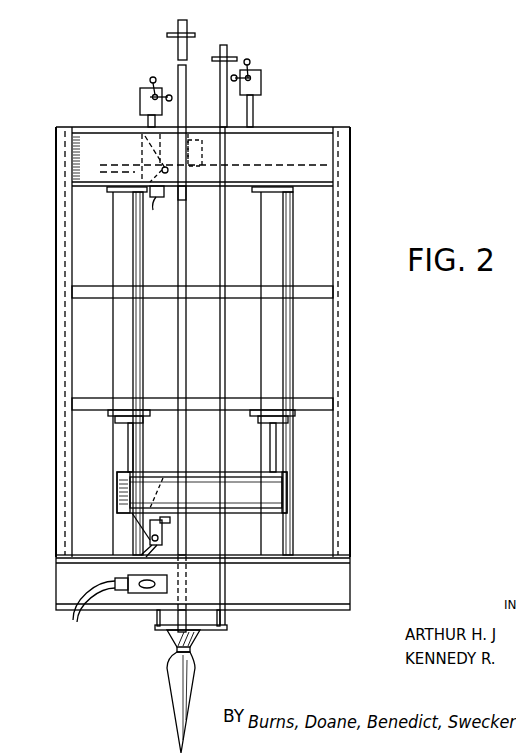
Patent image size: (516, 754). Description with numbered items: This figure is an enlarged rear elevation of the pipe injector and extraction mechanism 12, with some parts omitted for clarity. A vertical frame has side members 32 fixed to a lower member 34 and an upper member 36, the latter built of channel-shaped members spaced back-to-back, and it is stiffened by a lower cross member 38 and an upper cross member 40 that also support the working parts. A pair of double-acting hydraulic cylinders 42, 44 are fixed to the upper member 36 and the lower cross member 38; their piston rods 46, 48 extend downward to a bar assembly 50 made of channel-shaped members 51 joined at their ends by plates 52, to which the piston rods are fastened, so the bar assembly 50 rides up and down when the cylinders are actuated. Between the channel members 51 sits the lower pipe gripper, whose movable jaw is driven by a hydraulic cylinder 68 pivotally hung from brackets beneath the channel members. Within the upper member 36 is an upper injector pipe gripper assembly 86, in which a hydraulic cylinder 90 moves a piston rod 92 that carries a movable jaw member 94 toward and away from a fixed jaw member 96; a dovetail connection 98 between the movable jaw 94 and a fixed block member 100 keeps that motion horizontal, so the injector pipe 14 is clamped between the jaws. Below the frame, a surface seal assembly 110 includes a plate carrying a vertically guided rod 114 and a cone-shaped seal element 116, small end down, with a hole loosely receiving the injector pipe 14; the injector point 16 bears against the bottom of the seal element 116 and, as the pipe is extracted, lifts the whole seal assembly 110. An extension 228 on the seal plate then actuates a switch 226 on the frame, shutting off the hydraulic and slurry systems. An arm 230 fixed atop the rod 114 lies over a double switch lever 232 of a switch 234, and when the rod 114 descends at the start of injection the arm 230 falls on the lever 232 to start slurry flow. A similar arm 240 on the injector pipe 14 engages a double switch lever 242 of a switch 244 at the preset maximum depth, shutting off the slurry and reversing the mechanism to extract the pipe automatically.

The pipe injector and extraction mechanism 12 is at (362, 465).
The injector pipe 14 is at (177, 357).
The injector point 16 is at (170, 700).
The side members 32 is at (57, 378).
The lower member 34 is at (335, 597).
The upper member 36 is at (312, 140).
The lower cross member 38 is at (306, 407).
The upper cross member 40 is at (300, 298).
The hydraulically actuated cylinder 42 is at (275, 276).
The hydraulically actuated cylinder 44 is at (125, 254).
The piston rod 46 is at (278, 456).
The piston rod 48 is at (126, 442).
The bar assembly 50 is at (239, 514).
The channel-shaped members 51 is at (262, 489).
The plates 52 is at (118, 490).
The hydraulically actuated cylinder 68 is at (148, 540).
The upper injector pipe gripper assembly 86 is at (205, 168).
The hydraulically actuated cylinder 90 is at (157, 199).
The piston rod 92 is at (186, 188).
The movable jaw member 94 is at (190, 150).
The fixed jaw member 96 is at (187, 128).
The dovetail connection 98 is at (150, 148).
The fixed block member 100 is at (150, 140).
The surface seal assembly 110 is at (206, 637).
The rod 114 is at (226, 356).
The cone-shaped seal element 116 is at (165, 638).
The switch 226 is at (162, 572).
The extension 228 is at (156, 622).
The arm 230 is at (228, 56).
The double switch lever 232 is at (250, 62).
The switch 234 is at (261, 87).
The arm 240 is at (167, 35).
The double switch lever 242 is at (153, 78).
The switch 244 is at (141, 95).